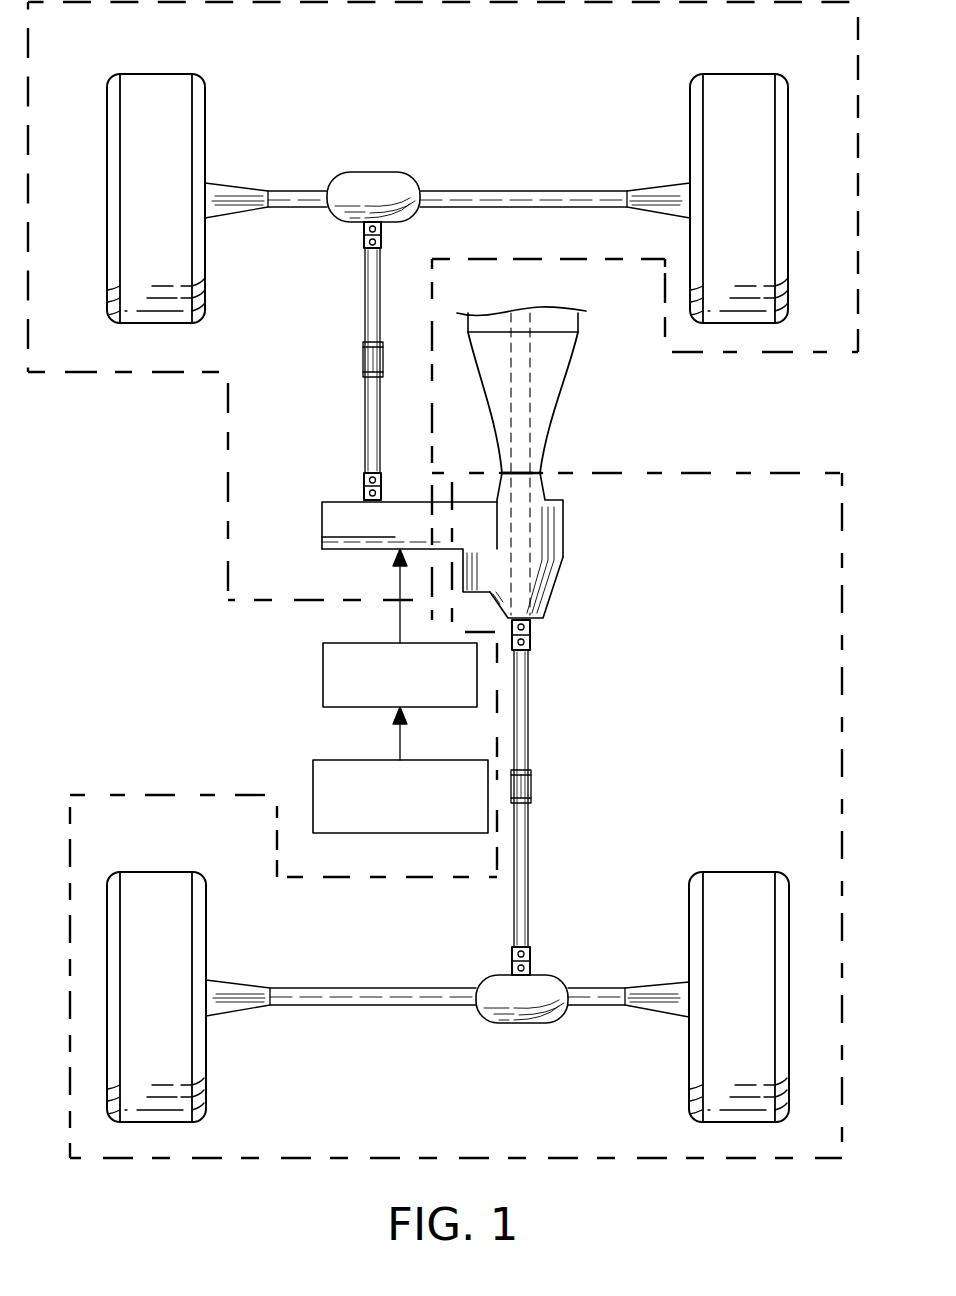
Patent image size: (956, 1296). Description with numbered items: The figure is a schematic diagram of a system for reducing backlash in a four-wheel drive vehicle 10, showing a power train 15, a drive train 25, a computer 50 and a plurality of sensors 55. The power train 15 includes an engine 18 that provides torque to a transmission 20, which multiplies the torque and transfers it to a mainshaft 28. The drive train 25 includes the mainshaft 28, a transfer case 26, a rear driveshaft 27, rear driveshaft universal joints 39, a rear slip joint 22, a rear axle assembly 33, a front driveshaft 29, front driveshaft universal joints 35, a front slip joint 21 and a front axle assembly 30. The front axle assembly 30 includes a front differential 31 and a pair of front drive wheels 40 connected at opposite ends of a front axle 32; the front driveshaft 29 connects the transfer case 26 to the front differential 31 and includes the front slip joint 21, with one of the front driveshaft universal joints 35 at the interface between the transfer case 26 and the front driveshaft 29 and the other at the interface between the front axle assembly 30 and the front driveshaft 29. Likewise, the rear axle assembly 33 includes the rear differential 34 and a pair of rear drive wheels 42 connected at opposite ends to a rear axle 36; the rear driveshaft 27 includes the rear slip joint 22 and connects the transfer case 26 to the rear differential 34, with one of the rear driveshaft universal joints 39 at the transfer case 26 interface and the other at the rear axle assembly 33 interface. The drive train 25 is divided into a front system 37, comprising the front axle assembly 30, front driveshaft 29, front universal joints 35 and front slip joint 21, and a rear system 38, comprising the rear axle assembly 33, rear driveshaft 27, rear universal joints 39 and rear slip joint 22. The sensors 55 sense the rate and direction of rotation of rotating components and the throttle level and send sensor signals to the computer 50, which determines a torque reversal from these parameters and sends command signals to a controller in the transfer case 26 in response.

The four-wheel drive vehicle 10 is at (203, 720).
The power train 15 is at (700, 395).
The engine 18 is at (588, 318).
The transmission 20 is at (557, 400).
The front slip joint 21 is at (361, 352).
The rear slip joint 22 is at (533, 797).
The drive train 25 is at (718, 655).
The transfer case 26 is at (562, 600).
The rear driveshaft 27 is at (530, 683).
The mainshaft 28 is at (535, 530).
The front driveshaft 29 is at (363, 400).
The front axle assembly 30 is at (449, 62).
The front differential 31 is at (388, 172).
The front axle 32 is at (488, 190).
The rear axle assembly 33 is at (471, 1060).
The rear differential 34 is at (548, 975).
The front driveshaft universal joints 35 is at (361, 233).
The rear axle 36 is at (404, 990).
The front system 37 is at (162, 353).
The rear system 38 is at (812, 573).
The rear driveshaft universal joints 39 is at (532, 635).
The front drive wheels 40 is at (150, 73).
The rear drive wheels 42 is at (174, 871).
The computer 50 is at (400, 628).
The sensors 55 is at (400, 770).